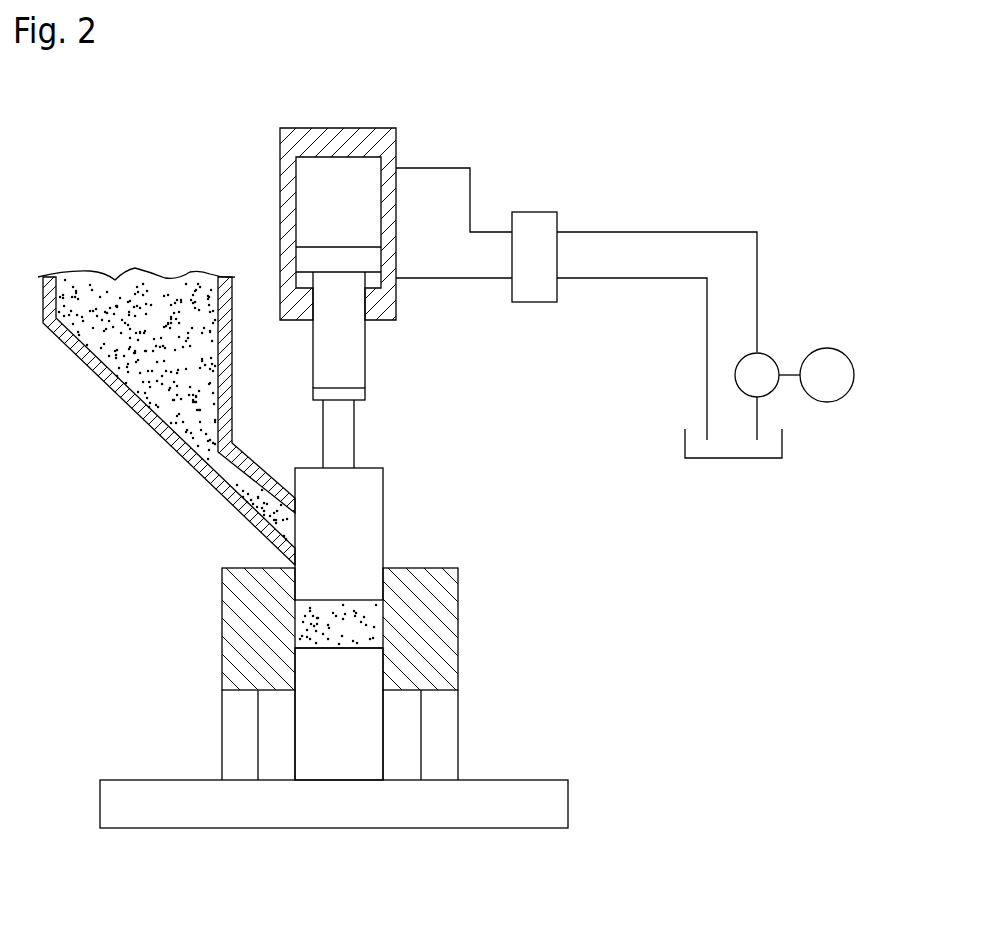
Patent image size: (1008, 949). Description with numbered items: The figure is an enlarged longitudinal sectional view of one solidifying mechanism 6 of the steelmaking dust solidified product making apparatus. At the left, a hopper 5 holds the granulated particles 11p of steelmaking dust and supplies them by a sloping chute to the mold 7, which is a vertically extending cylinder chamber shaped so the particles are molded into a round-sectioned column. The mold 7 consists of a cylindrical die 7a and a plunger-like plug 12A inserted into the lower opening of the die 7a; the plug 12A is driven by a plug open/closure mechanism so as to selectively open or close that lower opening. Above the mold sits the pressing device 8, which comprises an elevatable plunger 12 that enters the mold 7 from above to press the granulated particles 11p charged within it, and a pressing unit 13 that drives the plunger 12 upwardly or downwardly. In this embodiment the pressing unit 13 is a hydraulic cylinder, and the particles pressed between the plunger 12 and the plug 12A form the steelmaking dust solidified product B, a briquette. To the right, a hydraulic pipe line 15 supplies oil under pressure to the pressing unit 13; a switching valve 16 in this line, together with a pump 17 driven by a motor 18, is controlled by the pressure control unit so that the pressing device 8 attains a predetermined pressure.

The hopper 5 is at (85, 368).
The granulated particles 11p is at (137, 300).
The solidifying mechanism 6 is at (237, 192).
The pressing device 8 is at (402, 436).
The pressing unit 13 is at (383, 322).
The plunger 12 is at (365, 487).
The steelmaking dust solidified product B is at (360, 623).
The plug 12A is at (352, 682).
The mold 7 is at (332, 674).
The die 7a is at (240, 617).
The hydraulic pipe line 15 is at (621, 285).
The switching valve 16 is at (535, 303).
The pump 17 is at (767, 357).
The motor 18 is at (832, 403).